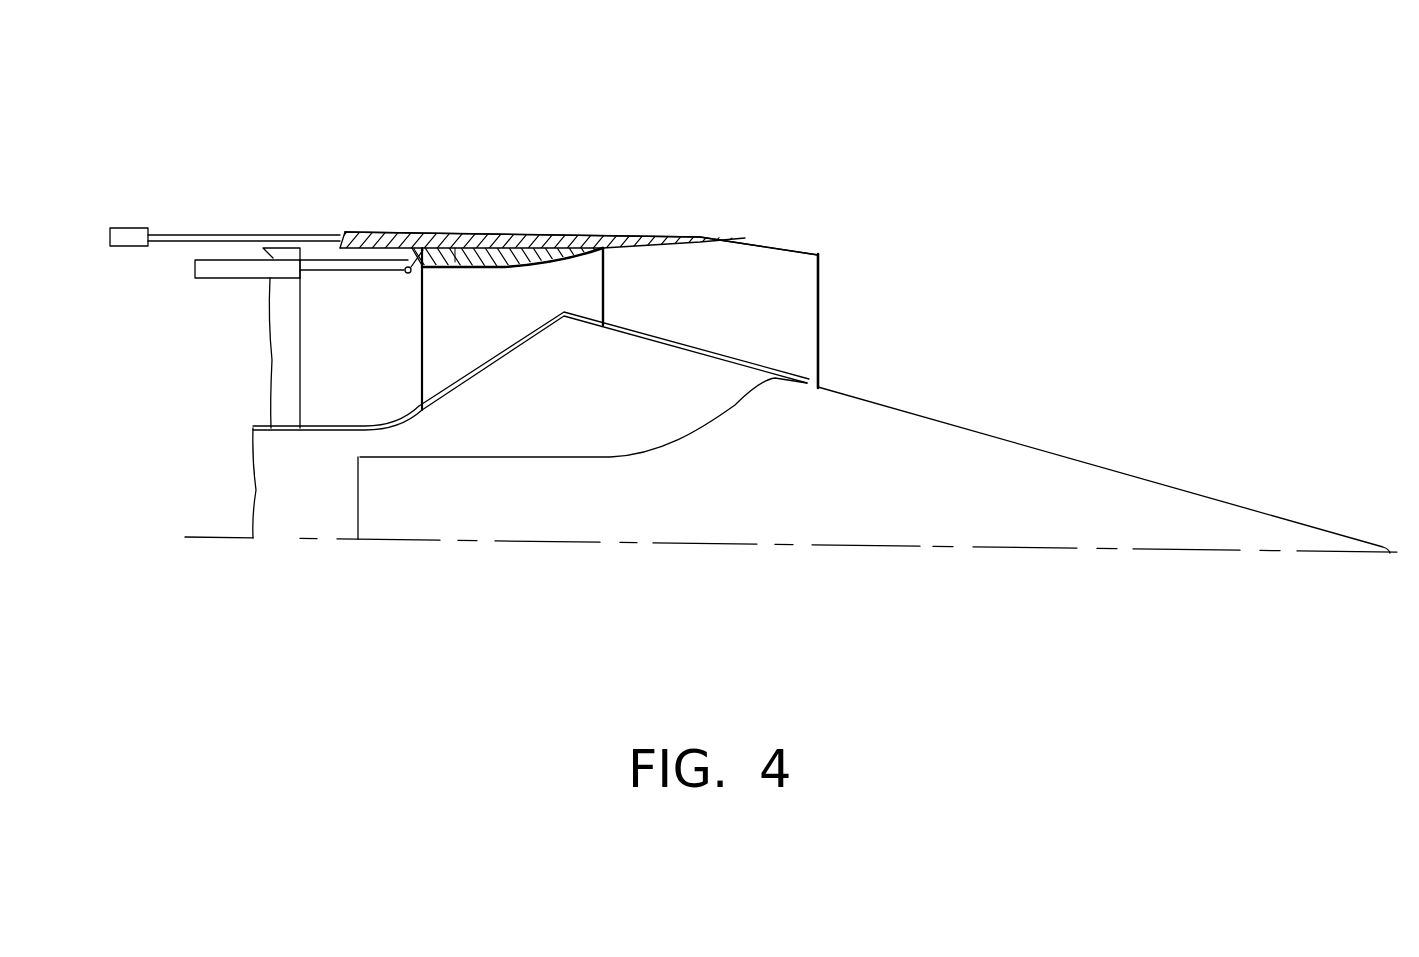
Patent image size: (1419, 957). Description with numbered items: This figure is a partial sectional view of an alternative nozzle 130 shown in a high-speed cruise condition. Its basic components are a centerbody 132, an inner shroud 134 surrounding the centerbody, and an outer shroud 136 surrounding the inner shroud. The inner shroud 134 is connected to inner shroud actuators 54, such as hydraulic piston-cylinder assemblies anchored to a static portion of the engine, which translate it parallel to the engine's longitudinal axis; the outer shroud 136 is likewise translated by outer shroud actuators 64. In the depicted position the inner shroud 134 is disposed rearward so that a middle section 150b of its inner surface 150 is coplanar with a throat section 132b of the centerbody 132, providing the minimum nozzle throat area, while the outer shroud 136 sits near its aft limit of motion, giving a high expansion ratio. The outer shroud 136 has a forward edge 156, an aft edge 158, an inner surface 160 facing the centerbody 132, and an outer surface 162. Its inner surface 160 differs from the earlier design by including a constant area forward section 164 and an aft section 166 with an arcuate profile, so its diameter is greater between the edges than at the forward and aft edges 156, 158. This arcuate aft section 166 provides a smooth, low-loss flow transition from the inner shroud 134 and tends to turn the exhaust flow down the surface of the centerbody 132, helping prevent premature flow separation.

The nozzle 130 is at (875, 135).
The centerbody 132 is at (927, 418).
The throat section 132b is at (563, 315).
The inner shroud 134 is at (486, 265).
The outer shroud 136 is at (527, 233).
The inner surface 150 is at (486, 268).
The middle section 150b is at (510, 260).
The forward edge 156 is at (341, 233).
The aft edge 158 is at (820, 272).
The inner surface 160 is at (482, 265).
The outer surface 162 is at (455, 233).
The constant area forward section 164 is at (428, 264).
The aft section 166 is at (599, 237).
The outer shroud actuators 64 is at (118, 238).
The inner shroud actuators 54 is at (228, 270).